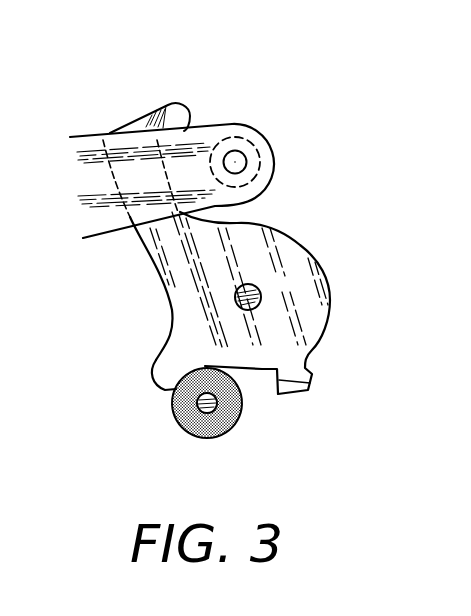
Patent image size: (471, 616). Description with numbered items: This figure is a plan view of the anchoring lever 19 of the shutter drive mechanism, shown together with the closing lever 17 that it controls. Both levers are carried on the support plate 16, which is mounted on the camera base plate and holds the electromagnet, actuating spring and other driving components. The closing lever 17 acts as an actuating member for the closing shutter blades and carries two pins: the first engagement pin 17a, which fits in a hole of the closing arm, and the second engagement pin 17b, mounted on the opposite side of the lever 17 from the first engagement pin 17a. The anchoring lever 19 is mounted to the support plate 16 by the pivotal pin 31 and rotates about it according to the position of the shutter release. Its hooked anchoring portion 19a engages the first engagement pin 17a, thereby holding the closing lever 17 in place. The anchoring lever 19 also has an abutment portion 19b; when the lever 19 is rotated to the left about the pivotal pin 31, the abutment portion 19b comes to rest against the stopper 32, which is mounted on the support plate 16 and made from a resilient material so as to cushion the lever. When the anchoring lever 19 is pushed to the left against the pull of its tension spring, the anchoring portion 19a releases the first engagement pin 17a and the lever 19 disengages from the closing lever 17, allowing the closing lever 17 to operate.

The support plate 16 is at (224, 250).
The closing lever 17 is at (232, 126).
The first engagement pin 17a is at (258, 170).
The second engagement pin 17b is at (244, 160).
The anchoring lever 19 is at (307, 318).
The anchoring portion 19a is at (170, 111).
The abutment portion 19b is at (152, 364).
The pivotal pin 31 is at (261, 292).
The stopper 32 is at (238, 420).